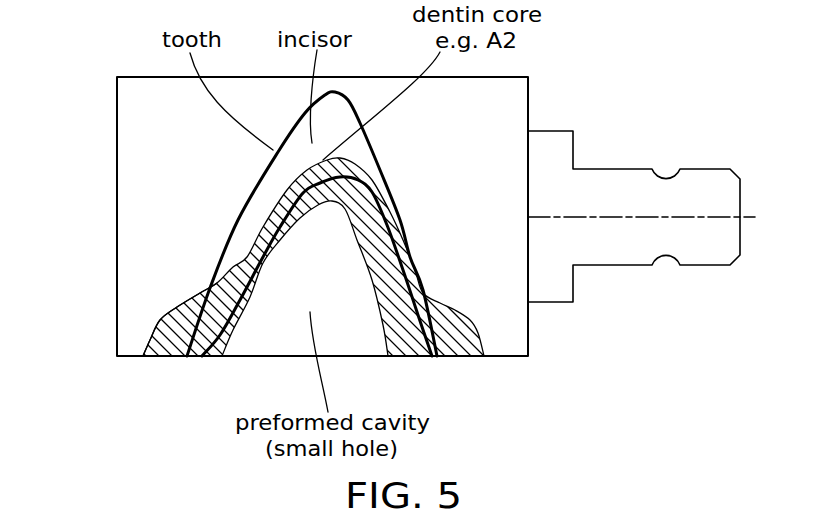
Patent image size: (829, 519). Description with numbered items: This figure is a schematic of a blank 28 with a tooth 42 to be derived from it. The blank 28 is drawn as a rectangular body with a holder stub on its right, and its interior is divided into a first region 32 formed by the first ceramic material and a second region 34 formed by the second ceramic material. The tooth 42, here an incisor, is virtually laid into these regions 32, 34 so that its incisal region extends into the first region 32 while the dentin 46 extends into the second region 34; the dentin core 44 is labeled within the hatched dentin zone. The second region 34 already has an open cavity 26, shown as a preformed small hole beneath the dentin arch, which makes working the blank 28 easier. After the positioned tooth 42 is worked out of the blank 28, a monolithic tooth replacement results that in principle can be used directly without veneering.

The open cavity 26 is at (268, 327).
The blank 28 is at (137, 231).
The first region 32 is at (183, 174).
The second region 34 is at (178, 323).
The tooth 42 is at (237, 214).
The incisor enamel 44 is at (338, 117).
The dentin 46 is at (211, 303).